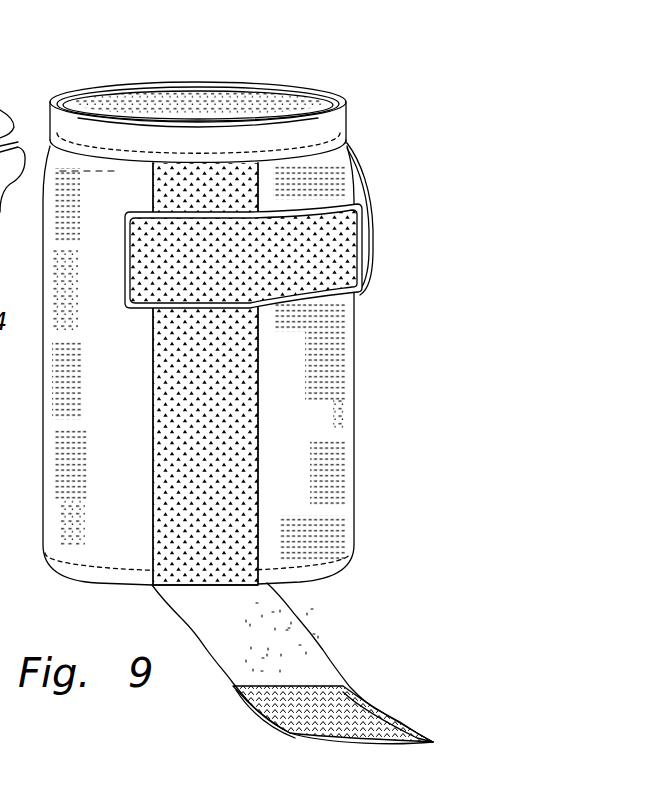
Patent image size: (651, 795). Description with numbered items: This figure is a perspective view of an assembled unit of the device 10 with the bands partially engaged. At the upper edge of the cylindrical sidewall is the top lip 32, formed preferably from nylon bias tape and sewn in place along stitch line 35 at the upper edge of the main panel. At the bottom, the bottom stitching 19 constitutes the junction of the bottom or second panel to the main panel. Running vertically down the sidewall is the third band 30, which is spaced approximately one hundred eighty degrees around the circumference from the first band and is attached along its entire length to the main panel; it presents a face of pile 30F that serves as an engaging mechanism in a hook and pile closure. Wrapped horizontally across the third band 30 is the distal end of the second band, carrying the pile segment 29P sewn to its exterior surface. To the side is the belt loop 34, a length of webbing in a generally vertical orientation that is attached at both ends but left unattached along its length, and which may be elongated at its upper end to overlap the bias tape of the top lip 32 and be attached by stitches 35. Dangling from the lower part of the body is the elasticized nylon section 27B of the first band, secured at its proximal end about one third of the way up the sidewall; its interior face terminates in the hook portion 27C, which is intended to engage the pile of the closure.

The device 10 is at (272, 66).
The top lip 32 is at (324, 96).
The bottom stitching 19 is at (120, 568).
The third band 30 is at (209, 374).
The face of pile 30F is at (207, 495).
The pile segment 29P is at (305, 258).
The belt loop 34 is at (373, 258).
The elasticized nylon section 27B is at (320, 650).
The hook portion 27C is at (273, 712).
The stitch line 35 is at (338, 790).